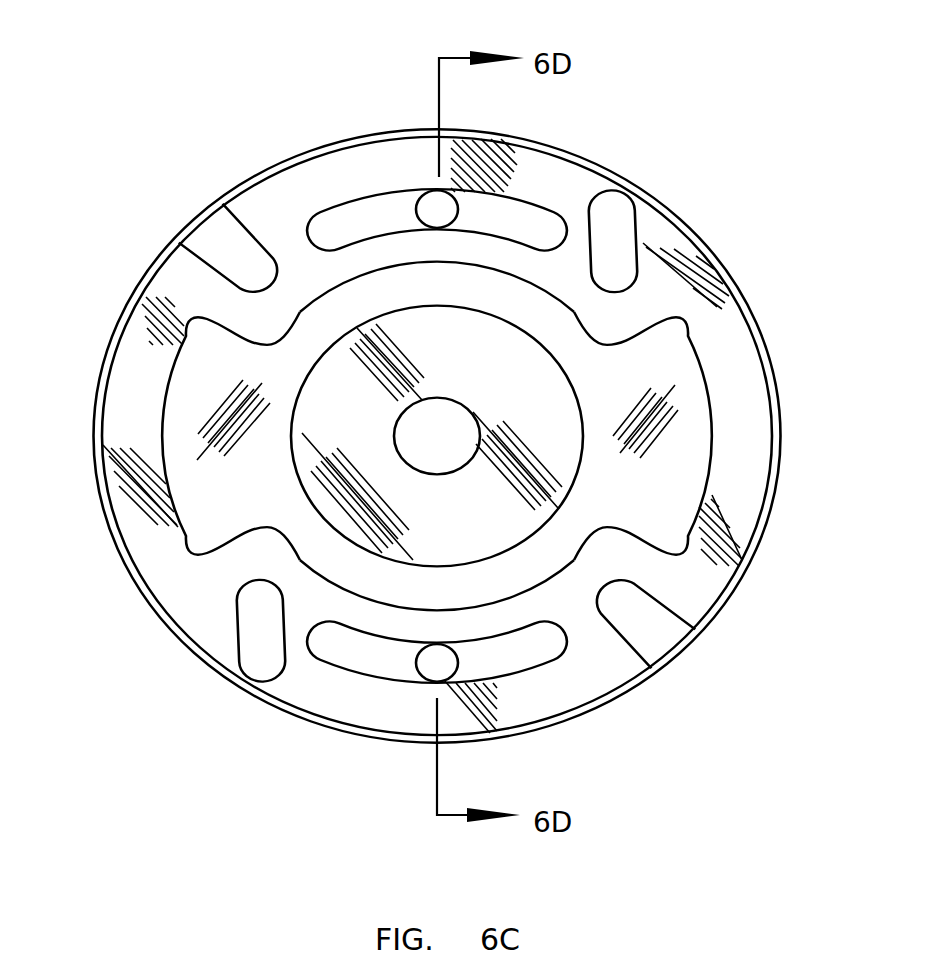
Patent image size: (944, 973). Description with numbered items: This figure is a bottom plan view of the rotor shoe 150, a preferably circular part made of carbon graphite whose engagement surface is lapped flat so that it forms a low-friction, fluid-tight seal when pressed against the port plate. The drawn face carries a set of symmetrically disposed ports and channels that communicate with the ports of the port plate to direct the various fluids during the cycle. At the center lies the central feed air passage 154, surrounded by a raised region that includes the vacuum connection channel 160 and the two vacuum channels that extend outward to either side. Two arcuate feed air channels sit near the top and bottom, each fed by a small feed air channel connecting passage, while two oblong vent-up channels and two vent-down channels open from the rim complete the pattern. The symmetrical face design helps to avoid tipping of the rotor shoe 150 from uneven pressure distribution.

The rotor shoe 150 is at (219, 108).
The central feed air passage 154 is at (423, 397).
The vacuum connection channel 160 is at (470, 608).